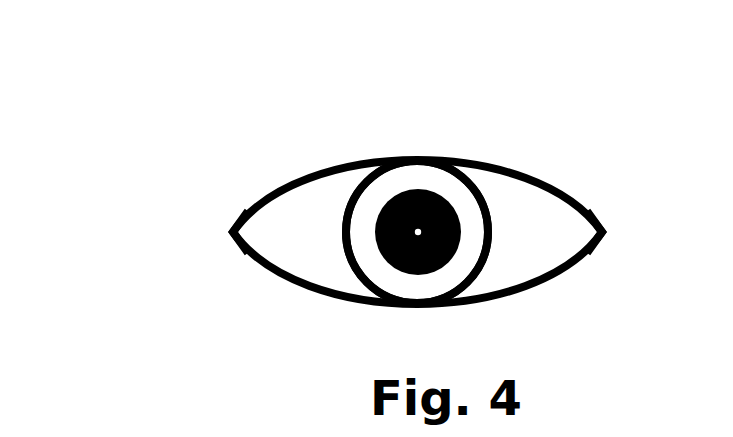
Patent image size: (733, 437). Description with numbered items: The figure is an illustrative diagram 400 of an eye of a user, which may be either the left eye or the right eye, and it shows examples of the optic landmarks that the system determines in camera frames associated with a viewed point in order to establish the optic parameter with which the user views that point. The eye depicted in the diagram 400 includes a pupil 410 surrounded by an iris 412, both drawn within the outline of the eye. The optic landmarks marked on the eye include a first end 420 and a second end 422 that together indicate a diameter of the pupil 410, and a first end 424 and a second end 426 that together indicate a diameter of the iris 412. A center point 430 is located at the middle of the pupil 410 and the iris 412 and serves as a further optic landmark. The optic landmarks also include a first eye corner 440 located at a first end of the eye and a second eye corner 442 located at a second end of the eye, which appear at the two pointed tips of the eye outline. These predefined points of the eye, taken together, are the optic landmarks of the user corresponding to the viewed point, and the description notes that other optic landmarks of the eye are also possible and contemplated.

The diagram 400 is at (312, 160).
The pupil 410 is at (406, 176).
The iris 412 is at (421, 196).
The first end 420 is at (358, 232).
The second end 422 is at (477, 232).
The first end 424 is at (321, 188).
The second end 426 is at (512, 189).
The center point 430 is at (430, 243).
The first eye corner 440 is at (210, 203).
The second eye corner 442 is at (624, 205).